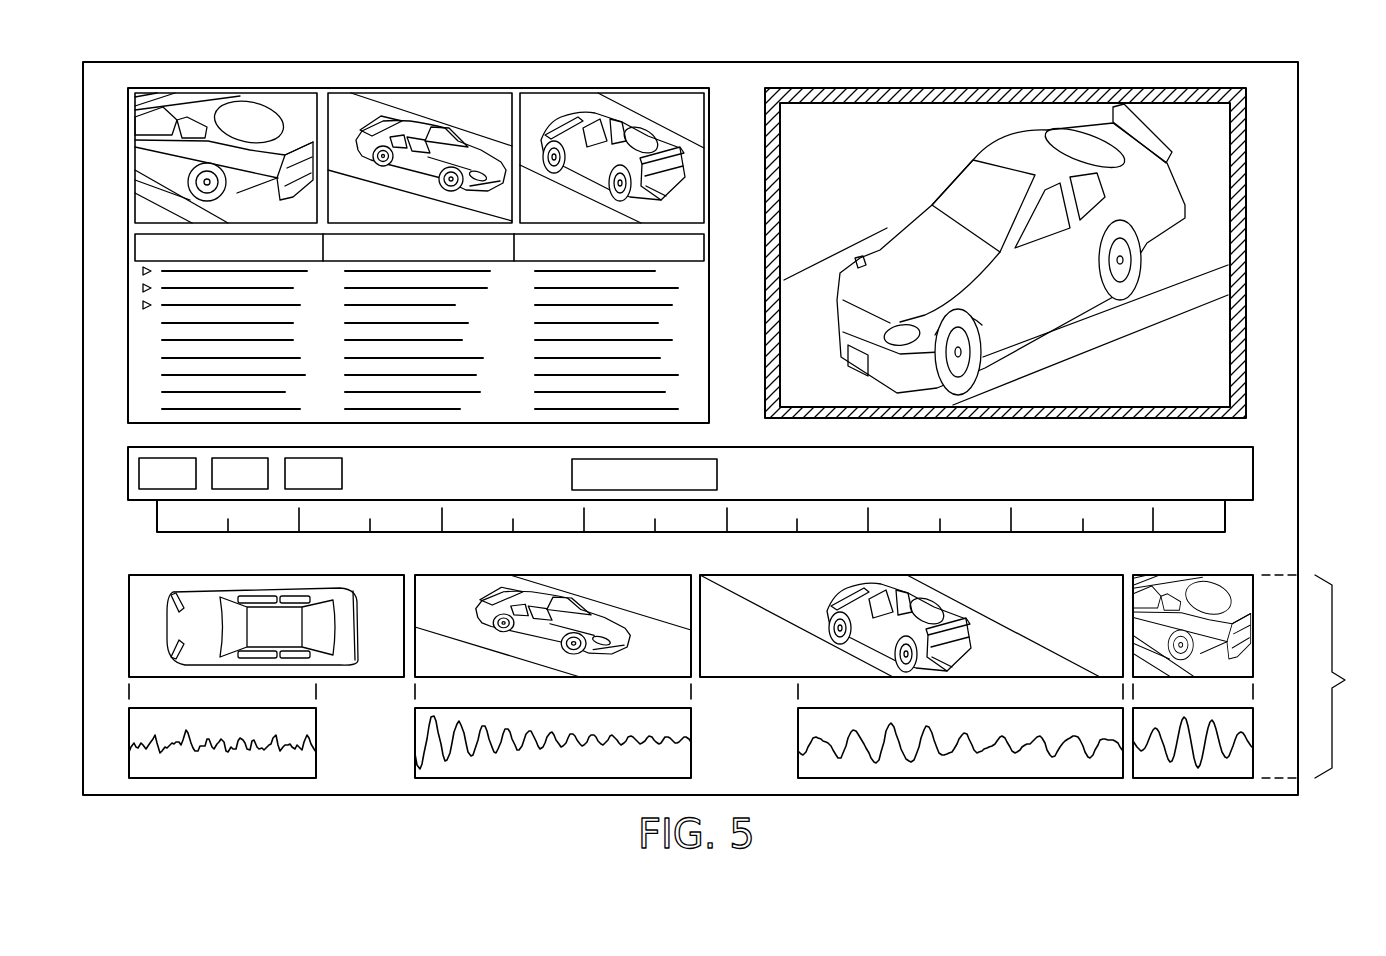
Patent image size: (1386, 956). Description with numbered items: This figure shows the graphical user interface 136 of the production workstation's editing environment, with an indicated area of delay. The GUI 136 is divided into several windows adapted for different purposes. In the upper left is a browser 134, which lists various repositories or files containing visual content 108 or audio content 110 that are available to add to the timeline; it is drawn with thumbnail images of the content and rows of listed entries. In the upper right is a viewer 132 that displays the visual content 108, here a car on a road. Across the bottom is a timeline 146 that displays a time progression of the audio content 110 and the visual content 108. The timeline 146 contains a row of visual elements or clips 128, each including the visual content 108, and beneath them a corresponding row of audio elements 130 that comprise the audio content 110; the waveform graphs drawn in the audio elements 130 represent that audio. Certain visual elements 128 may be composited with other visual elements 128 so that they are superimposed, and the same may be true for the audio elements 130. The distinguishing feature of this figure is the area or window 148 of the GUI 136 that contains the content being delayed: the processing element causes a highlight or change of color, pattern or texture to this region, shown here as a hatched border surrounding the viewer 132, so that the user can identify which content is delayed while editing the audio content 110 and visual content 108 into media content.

The visual content 108 is at (644, 609).
The audio content 110 is at (634, 774).
The visual elements or clips 128 is at (268, 575).
The audio elements 130 is at (225, 779).
The viewer 132 is at (1034, 222).
The browser 134 is at (270, 88).
The graphical user interface 136 is at (692, 62).
The timeline 146 is at (1324, 676).
The area or window of the GUI 148 is at (1248, 170).